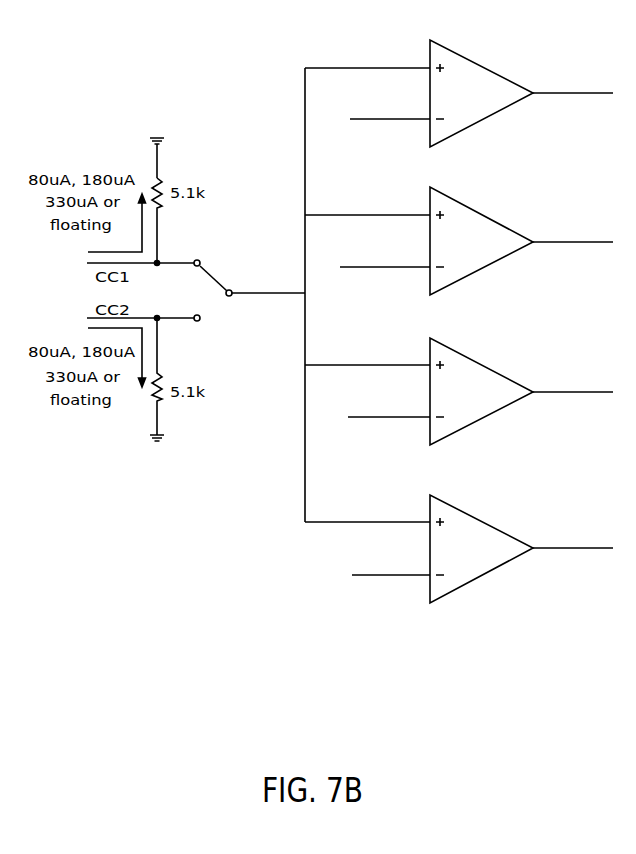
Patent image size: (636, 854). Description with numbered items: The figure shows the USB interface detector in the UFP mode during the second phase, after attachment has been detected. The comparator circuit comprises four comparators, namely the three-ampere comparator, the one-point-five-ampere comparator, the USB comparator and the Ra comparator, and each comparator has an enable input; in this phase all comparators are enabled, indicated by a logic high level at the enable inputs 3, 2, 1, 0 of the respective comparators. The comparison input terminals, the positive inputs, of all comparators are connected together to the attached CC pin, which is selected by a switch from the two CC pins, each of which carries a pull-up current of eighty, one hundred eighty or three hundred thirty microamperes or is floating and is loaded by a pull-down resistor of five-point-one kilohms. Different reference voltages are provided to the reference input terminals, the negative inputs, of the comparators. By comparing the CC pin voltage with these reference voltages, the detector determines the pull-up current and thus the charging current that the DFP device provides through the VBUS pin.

The comparator en_comp 3 (comp_3a, v3a 2.11V) 3 is at (480, 66).
The comparator en_comp 2 (comp_1p5a, v1p5a 1.23V) 2 is at (480, 213).
The comparator en_comp 1 (comp_usb, vdef 0.66V) 1 is at (480, 364).
The comparator en_comp 0 (comp_ra, vra 0.2V) 0 is at (480, 521).